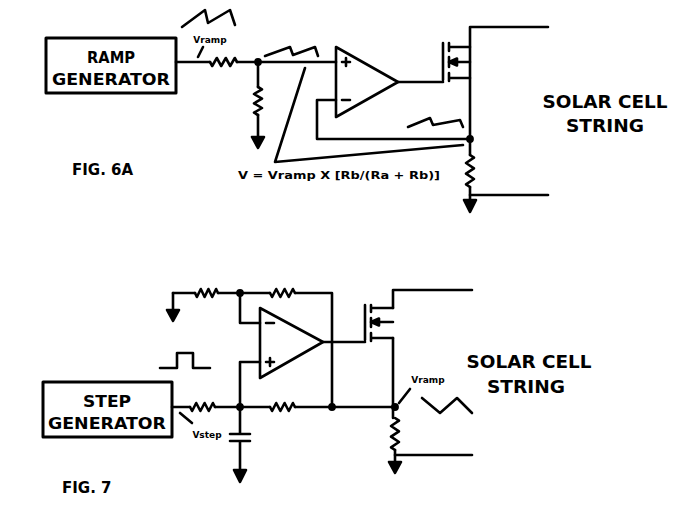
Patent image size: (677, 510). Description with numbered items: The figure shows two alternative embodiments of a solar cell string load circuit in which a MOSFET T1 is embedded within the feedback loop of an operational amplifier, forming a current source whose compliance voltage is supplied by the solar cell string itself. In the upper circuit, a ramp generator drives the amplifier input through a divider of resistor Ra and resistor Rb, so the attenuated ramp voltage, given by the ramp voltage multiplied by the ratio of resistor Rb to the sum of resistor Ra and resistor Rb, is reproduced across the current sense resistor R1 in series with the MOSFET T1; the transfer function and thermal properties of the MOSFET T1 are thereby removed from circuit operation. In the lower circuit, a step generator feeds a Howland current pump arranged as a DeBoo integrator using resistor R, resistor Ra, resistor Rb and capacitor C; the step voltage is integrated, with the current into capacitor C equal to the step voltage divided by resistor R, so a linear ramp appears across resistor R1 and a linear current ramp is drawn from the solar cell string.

In FIG. 6A, the MOSFET T1 is at (455, 37).
In FIG. 7, the MOSFET T1 is at (385, 298).
In FIG. 6A, the current sense resistor R1 is at (480, 170).
In FIG. 7, the current sense resistor R1 is at (405, 430).
In FIG. 6A, the resistor Ra is at (223, 70).
In FIG. 7, the resistor Ra is at (206, 285).
In FIG. 6A, the resistor Rb is at (246, 99).
In FIG. 7, the resistor Rb is at (282, 342).
In FIG. 7, the resistor R is at (202, 398).
In FIG. 7, the capacitor C is at (247, 438).